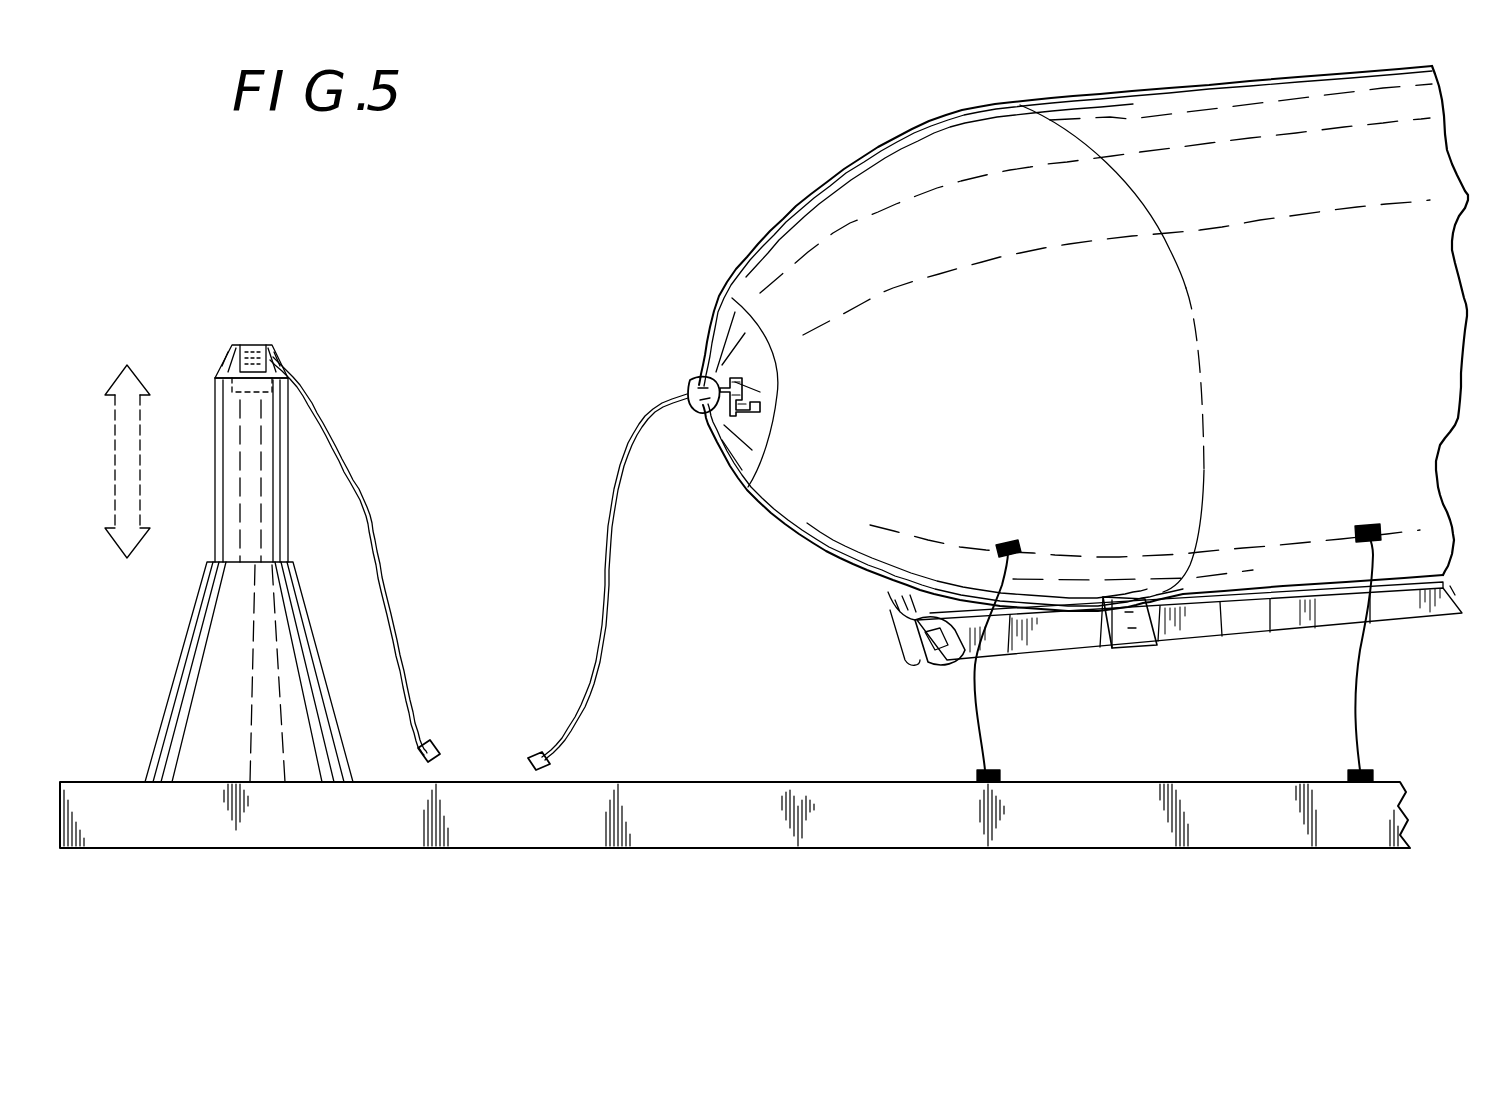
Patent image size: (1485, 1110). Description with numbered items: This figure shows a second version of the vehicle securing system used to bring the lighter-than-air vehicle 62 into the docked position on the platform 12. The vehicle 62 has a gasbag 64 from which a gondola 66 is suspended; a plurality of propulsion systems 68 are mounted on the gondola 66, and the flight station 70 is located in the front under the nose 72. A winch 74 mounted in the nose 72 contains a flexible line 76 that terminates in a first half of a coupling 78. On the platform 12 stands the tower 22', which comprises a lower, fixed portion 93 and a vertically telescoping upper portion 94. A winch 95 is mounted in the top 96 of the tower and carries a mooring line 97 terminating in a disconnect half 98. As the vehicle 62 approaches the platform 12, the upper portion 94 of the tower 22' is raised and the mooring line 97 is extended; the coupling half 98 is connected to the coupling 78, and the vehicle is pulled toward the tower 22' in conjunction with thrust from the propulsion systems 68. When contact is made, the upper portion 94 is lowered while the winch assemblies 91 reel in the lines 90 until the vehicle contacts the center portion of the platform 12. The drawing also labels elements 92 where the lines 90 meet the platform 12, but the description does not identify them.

The platform 12 is at (725, 782).
The tower 22' is at (220, 573).
The lighter-than-air vehicle 62 is at (838, 155).
The gasbag 64 is at (1060, 108).
The gondola 66 is at (1290, 640).
The propulsion systems 68 is at (1135, 650).
The flight station 70 is at (915, 645).
The nose 72 is at (702, 376).
The winch 74 is at (736, 416).
The flexible line 76 is at (625, 560).
The first half of coupling 78 is at (540, 755).
The lines 90 is at (980, 735).
The winch assemblies 91 is at (1008, 545).
The terminal block 92 is at (1000, 776).
The lower fixed portion 93 is at (160, 735).
The upper portion 94 is at (215, 472).
The winch 95 is at (242, 362).
The top 96 is at (248, 345).
The mooring line 97 is at (385, 570).
The disconnect half 98 is at (428, 748).